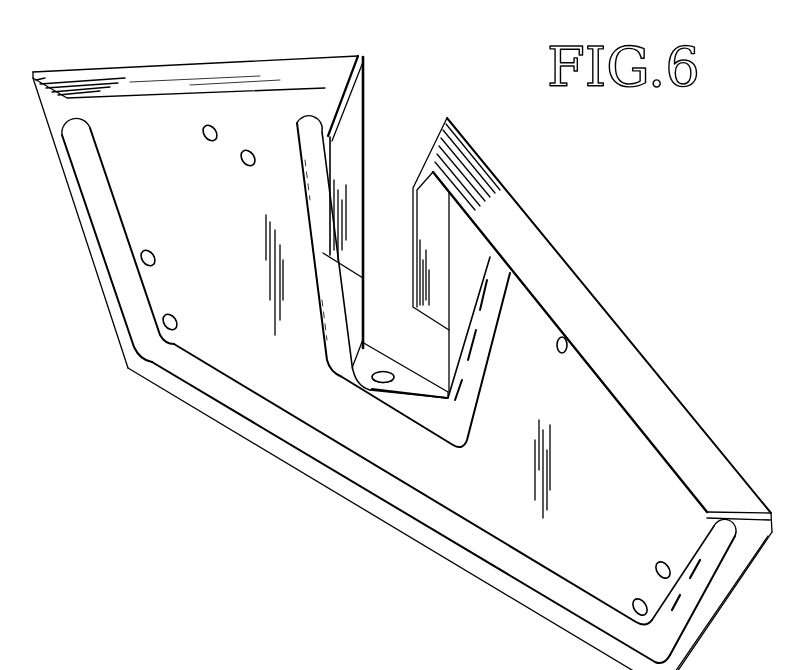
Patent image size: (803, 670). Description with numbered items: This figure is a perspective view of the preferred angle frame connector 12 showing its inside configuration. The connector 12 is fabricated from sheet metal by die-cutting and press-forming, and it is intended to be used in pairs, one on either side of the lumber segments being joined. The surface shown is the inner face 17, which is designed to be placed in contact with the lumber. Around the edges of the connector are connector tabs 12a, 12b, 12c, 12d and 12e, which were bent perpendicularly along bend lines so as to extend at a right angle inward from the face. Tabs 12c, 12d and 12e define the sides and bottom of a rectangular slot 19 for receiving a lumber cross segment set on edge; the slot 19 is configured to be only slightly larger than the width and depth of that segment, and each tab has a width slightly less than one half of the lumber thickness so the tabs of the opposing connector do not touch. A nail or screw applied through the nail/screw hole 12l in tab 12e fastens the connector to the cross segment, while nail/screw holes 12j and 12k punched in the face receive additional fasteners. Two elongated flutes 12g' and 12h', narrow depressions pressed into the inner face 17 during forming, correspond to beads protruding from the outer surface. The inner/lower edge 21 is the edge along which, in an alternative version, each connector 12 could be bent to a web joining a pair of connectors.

The angle frame connector 12 is at (616, 283).
The connector tab 12a is at (695, 353).
The connector tab 12b is at (215, 68).
The connector tab 12c is at (430, 143).
The connector tab 12d is at (365, 92).
The connector tab 12e is at (365, 345).
The flute 12g' is at (492, 361).
The flute 12h' is at (647, 587).
The nail/screw holes 12j is at (557, 351).
The nail/screw holes 12k is at (240, 162).
The nail/screw hole 12l is at (393, 388).
The inner face 17 is at (598, 476).
The rectangular slot 19 is at (402, 118).
The inner/lower edge 21 is at (313, 478).